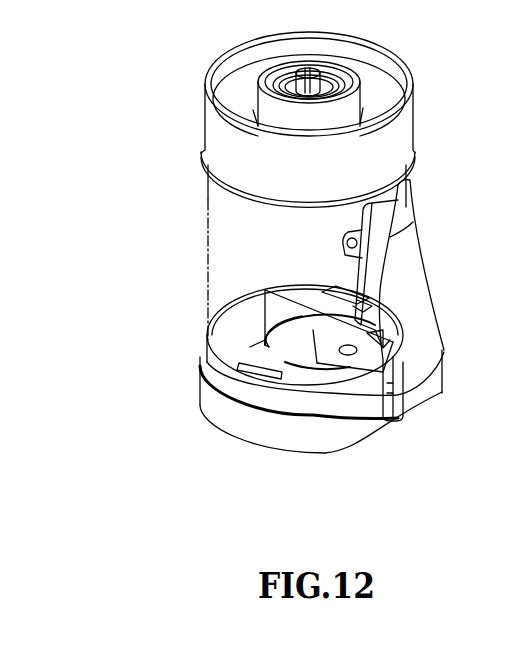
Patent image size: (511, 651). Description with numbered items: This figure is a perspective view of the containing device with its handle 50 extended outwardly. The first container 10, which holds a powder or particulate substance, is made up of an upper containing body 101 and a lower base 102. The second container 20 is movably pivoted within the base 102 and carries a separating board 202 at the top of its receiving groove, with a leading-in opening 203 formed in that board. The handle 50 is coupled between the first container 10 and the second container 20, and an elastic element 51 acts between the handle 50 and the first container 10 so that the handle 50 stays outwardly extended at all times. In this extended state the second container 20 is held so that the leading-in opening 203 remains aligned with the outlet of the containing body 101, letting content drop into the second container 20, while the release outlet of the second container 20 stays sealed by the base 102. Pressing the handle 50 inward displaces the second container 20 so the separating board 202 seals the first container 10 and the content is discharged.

The first container 10 is at (133, 208).
The containing body 101 is at (210, 253).
The base 102 is at (207, 345).
The second container 20 is at (415, 478).
The separating board 202 is at (330, 357).
The leading-in opening 203 is at (287, 331).
The handle 50 is at (410, 297).
The elastic element 51 is at (370, 260).